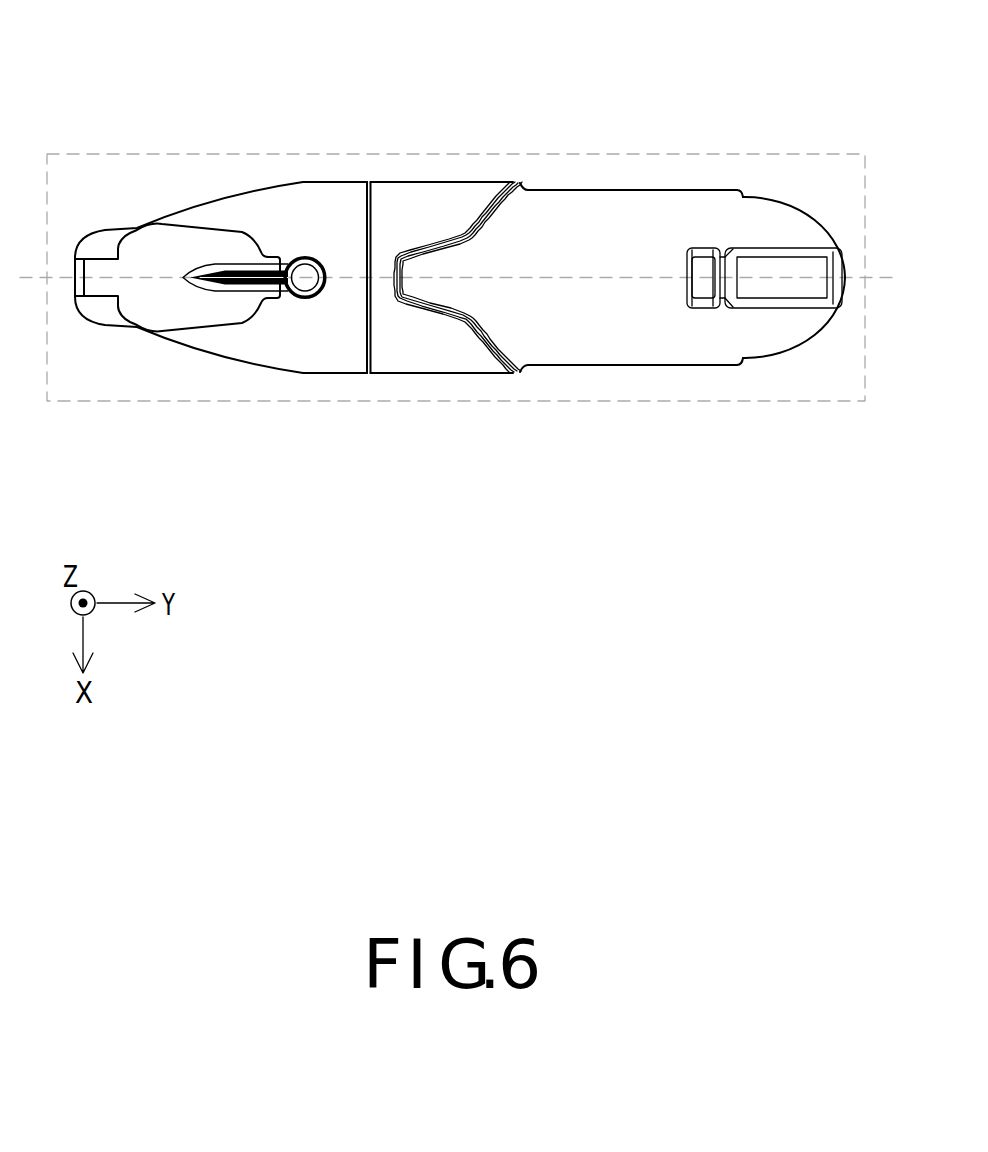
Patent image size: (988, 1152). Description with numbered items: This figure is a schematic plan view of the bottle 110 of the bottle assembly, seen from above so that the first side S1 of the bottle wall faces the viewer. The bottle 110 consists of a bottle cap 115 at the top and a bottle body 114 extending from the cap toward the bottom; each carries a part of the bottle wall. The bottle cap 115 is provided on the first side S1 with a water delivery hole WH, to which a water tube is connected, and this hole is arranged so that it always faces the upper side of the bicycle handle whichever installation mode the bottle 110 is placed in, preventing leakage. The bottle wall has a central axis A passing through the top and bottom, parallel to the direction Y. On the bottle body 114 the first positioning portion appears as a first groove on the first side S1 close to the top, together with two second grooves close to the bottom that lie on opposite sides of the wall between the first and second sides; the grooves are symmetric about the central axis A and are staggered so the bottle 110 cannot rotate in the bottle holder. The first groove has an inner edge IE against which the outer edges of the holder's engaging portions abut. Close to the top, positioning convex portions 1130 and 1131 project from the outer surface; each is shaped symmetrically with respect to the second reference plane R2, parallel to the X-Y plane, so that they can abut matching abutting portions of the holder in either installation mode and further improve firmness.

The bottle 110 is at (75, 37).
The water delivery hole WH is at (327, 248).
The positioning convex portion 1131 is at (452, 193).
The inner edge IE is at (466, 259).
The first side S1 is at (577, 262).
The second reference plane R2 is at (796, 258).
The central axis A is at (892, 278).
The bottle cap 115 is at (297, 352).
The positioning convex portion 1130 is at (435, 352).
The bottle body 114 is at (700, 258).